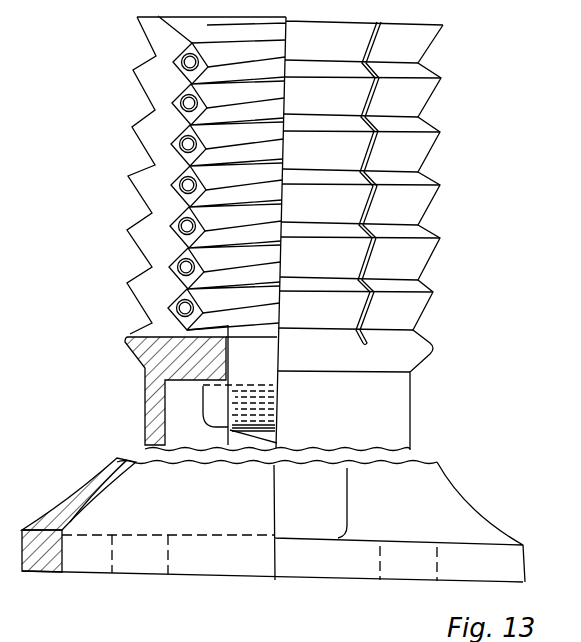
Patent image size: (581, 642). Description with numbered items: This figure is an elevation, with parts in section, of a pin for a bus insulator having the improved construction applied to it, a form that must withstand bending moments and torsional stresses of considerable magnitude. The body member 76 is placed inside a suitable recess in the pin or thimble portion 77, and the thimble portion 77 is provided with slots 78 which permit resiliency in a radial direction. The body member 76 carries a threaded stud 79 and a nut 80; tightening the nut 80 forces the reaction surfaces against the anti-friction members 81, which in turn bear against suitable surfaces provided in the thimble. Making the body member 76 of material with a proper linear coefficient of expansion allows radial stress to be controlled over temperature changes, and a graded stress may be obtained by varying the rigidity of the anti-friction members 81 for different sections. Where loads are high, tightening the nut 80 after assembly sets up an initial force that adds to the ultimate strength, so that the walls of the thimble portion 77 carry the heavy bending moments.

The body member 76 is at (225, 42).
The pin or thimble portion 77 is at (410, 42).
The slots 78 is at (425, 207).
The threaded stud 79 is at (245, 349).
The nut 80 is at (218, 400).
The anti-friction members 81 is at (173, 150).